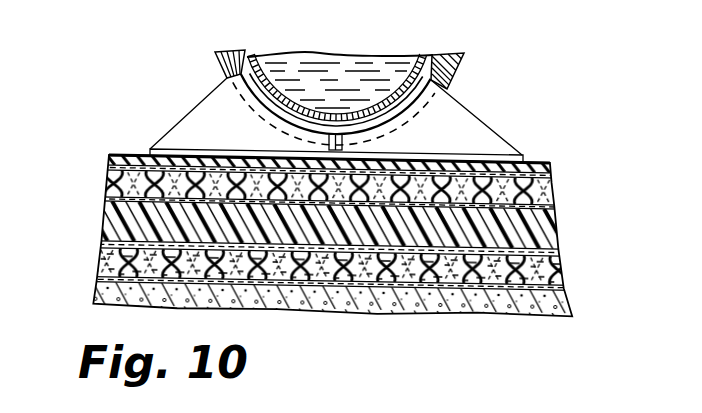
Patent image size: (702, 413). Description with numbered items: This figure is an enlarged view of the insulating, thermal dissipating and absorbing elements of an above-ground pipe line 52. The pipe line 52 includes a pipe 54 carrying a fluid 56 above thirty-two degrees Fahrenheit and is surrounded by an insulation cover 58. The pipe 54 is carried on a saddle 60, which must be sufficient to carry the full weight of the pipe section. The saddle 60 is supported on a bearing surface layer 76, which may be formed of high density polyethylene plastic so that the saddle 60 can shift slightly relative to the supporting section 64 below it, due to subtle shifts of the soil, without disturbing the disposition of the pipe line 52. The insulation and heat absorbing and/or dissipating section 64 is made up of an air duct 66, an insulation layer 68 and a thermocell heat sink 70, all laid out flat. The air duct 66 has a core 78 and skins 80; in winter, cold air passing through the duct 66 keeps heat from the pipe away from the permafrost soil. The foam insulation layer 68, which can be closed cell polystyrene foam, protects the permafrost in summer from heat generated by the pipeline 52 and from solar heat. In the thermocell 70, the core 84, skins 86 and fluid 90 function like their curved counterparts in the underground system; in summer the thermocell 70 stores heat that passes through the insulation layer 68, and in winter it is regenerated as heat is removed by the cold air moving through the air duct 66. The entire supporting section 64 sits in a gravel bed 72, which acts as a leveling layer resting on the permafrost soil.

The pipe line 52 is at (210, 69).
The pipe 54 is at (247, 56).
The fluid 56 is at (345, 63).
The insulation cover 58 is at (463, 68).
The saddle 60 is at (478, 133).
The insulation and heat absorbing and/or dissipating section 64 is at (548, 162).
The air duct 66 is at (553, 200).
The insulation layer 68 is at (537, 235).
The thermocell heat sink 70 is at (528, 270).
The gravel bed 72 is at (578, 310).
The bearing surface layer 76 is at (119, 155).
The core 78 is at (148, 155).
The skins 80 is at (102, 196).
The core 84 is at (108, 255).
The skins 86 is at (103, 282).
The fluid 90 is at (111, 238).